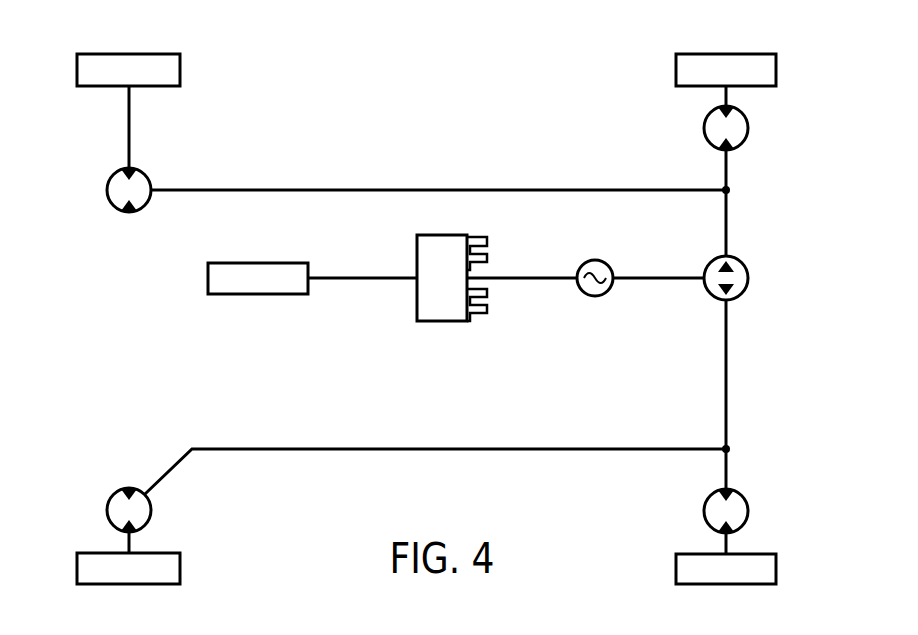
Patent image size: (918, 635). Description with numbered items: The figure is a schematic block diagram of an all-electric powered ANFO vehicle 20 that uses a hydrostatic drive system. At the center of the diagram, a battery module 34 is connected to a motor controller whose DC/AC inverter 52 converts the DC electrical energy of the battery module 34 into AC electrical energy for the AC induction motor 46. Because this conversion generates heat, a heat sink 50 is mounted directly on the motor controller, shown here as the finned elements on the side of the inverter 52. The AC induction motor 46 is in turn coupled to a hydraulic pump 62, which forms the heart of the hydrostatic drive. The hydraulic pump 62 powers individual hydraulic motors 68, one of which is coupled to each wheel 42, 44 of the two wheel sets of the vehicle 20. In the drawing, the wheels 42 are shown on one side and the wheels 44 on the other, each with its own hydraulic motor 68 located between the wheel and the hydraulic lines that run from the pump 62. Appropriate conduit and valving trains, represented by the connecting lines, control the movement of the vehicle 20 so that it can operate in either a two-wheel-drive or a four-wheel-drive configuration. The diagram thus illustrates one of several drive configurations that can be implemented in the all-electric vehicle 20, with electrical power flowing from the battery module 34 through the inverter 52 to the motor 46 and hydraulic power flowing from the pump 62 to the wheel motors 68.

The all-electric powered ANFO vehicle 20 is at (522, 38).
The battery module 34 is at (260, 263).
The wheel 42 is at (129, 53).
The wheel 44 is at (727, 53).
The AC induction motor 46 is at (607, 292).
The heat sink 50 is at (487, 305).
The DC/AC inverter 52 is at (442, 235).
The hydraulic pump 62 is at (745, 293).
The hydraulic motor 68 is at (114, 175).